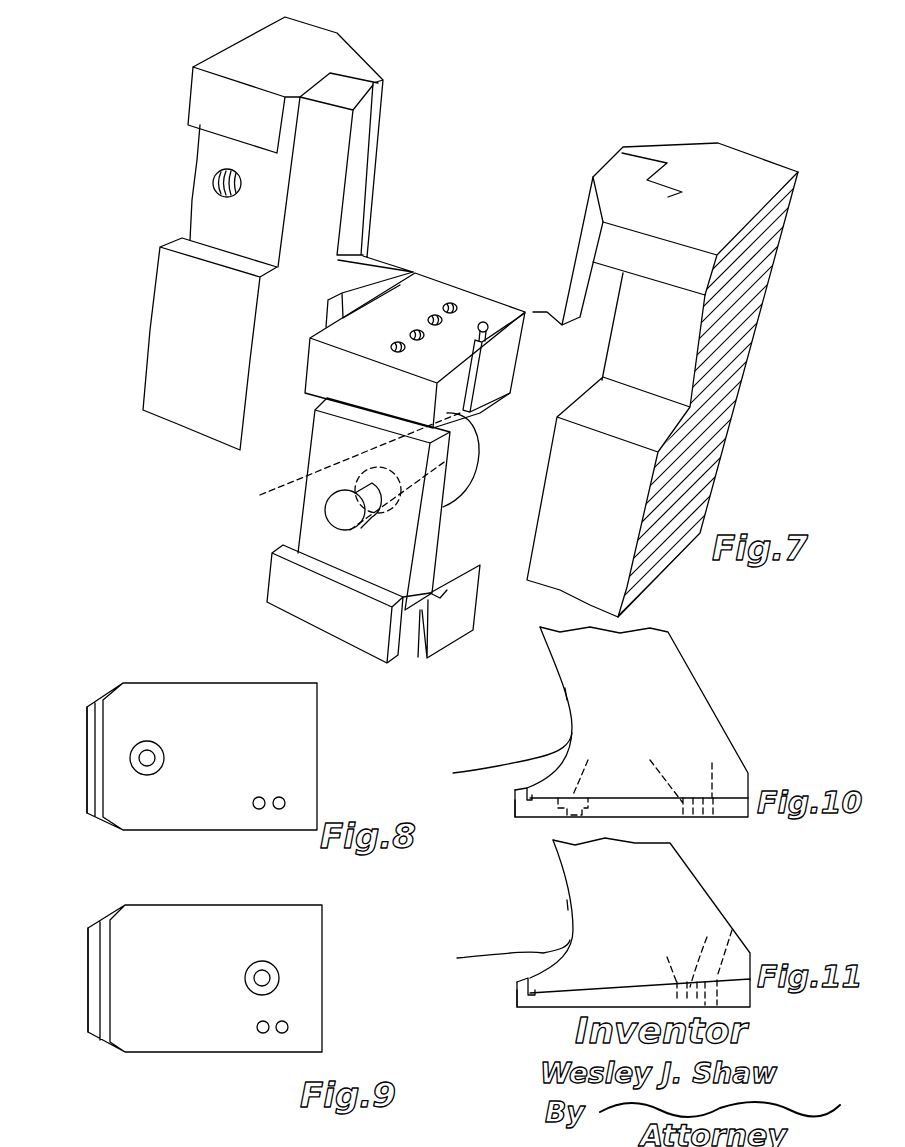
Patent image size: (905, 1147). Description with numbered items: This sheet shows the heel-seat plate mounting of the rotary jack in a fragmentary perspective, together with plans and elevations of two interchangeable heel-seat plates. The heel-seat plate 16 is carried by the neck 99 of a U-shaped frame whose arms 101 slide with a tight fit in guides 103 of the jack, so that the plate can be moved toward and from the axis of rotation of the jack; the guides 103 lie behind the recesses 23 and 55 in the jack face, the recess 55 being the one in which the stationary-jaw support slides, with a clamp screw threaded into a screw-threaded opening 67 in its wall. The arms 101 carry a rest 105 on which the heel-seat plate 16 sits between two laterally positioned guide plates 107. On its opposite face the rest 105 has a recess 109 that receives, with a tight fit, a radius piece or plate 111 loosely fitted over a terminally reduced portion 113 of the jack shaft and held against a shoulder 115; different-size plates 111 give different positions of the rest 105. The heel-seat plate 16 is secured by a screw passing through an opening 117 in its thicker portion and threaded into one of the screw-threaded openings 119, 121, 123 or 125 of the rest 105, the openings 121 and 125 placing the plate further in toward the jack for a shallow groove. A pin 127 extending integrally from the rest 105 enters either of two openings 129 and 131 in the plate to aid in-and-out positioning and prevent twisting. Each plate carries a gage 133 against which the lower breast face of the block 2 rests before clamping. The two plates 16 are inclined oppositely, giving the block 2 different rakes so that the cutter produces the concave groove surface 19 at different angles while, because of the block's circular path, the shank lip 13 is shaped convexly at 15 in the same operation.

In FIG. 10, the block 2 is at (683, 698).
In FIG. 11, the block 2 is at (697, 903).
In FIG. 10, the shank lip 13 is at (527, 785).
In FIG. 11, the shank lip 13 is at (527, 970).
In FIG. 10, the convex curve 15 is at (503, 753).
In FIG. 11, the convex curve 15 is at (507, 944).
In FIG. 8, the heel-seat plate 16 is at (150, 700).
In FIG. 9, the heel-seat plate 16 is at (175, 932).
In FIG. 10, the heel-seat plate 16 is at (643, 808).
In FIG. 11, the heel-seat plate 16 is at (615, 993).
In FIG. 10, the concave groove surface 19 is at (565, 688).
In FIG. 11, the concave groove surface 19 is at (567, 900).
In FIG. 7, the recess 23 is at (677, 352).
In FIG. 7, the recess 55 is at (213, 157).
In FIG. 7, the screw-threaded opening 67 is at (217, 197).
In FIG. 7, the neck 99 is at (557, 320).
In FIG. 7, the arms 101 is at (355, 190).
In FIG. 7, the guides 103 is at (360, 83).
In FIG. 7, the rest 105 is at (423, 283).
In FIG. 7, the guide plates 107 is at (376, 285).
In FIG. 7, the recess 109 is at (477, 432).
In FIG. 7, the radius piece or plate 111 is at (423, 537).
In FIG. 7, the terminally reduced portion 113 is at (327, 510).
In FIG. 7, the shoulder 115 is at (268, 486).
In FIG. 8, the opening 117 is at (153, 743).
In FIG. 9, the opening 117 is at (268, 967).
In FIG. 10, the opening 117 is at (589, 774).
In FIG. 11, the opening 117 is at (676, 965).
In FIG. 7, the screw-threaded opening 119 is at (393, 350).
In FIG. 7, the screw-threaded opening 121 is at (420, 340).
In FIG. 7, the screw-threaded opening 123 is at (435, 313).
In FIG. 7, the screw-threaded opening 125 is at (457, 307).
In FIG. 7, the pin 127 is at (485, 320).
In FIG. 8, the opening 129 is at (260, 810).
In FIG. 9, the opening 129 is at (262, 1032).
In FIG. 10, the opening 129 is at (669, 774).
In FIG. 11, the opening 129 is at (707, 958).
In FIG. 8, the opening 131 is at (283, 800).
In FIG. 9, the opening 131 is at (290, 1025).
In FIG. 10, the opening 131 is at (715, 783).
In FIG. 11, the opening 131 is at (756, 953).
In FIG. 8, the gage 133 is at (92, 763).
In FIG. 9, the gage 133 is at (97, 983).
In FIG. 10, the gage 133 is at (520, 797).
In FIG. 11, the gage 133 is at (420, 1017).